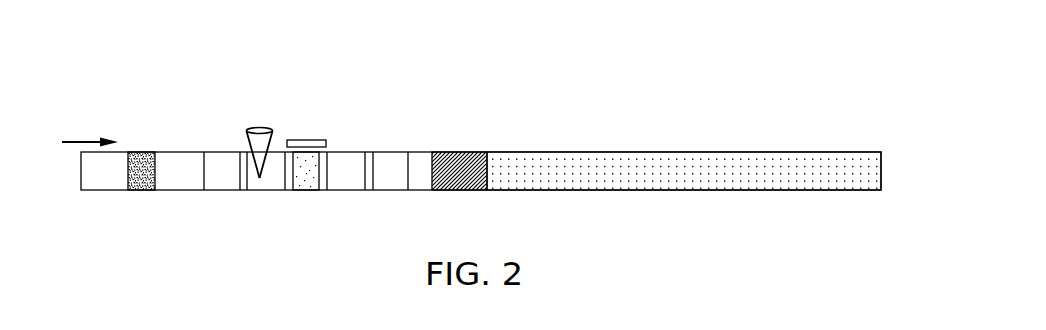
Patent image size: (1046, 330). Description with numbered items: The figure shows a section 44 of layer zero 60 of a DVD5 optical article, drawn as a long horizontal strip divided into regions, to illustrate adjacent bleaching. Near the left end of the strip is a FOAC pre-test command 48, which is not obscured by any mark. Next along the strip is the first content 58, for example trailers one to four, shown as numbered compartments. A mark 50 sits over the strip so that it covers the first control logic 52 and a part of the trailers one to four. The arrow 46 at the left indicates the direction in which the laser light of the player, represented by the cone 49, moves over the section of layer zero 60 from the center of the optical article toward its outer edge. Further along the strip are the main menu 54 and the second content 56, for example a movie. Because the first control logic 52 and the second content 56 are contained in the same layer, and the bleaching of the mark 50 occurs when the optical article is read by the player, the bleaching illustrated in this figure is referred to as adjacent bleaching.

The section 44 is at (770, 42).
The arrow 46 is at (85, 141).
The FOAC pre-test command 48 is at (145, 152).
The cone 49 is at (259, 128).
The mark 50 is at (302, 140).
The first control logic 52 is at (312, 160).
The main menu 54 is at (462, 152).
The second content 56 is at (710, 155).
The first content 58 is at (348, 186).
The layer 0 60 is at (80, 168).